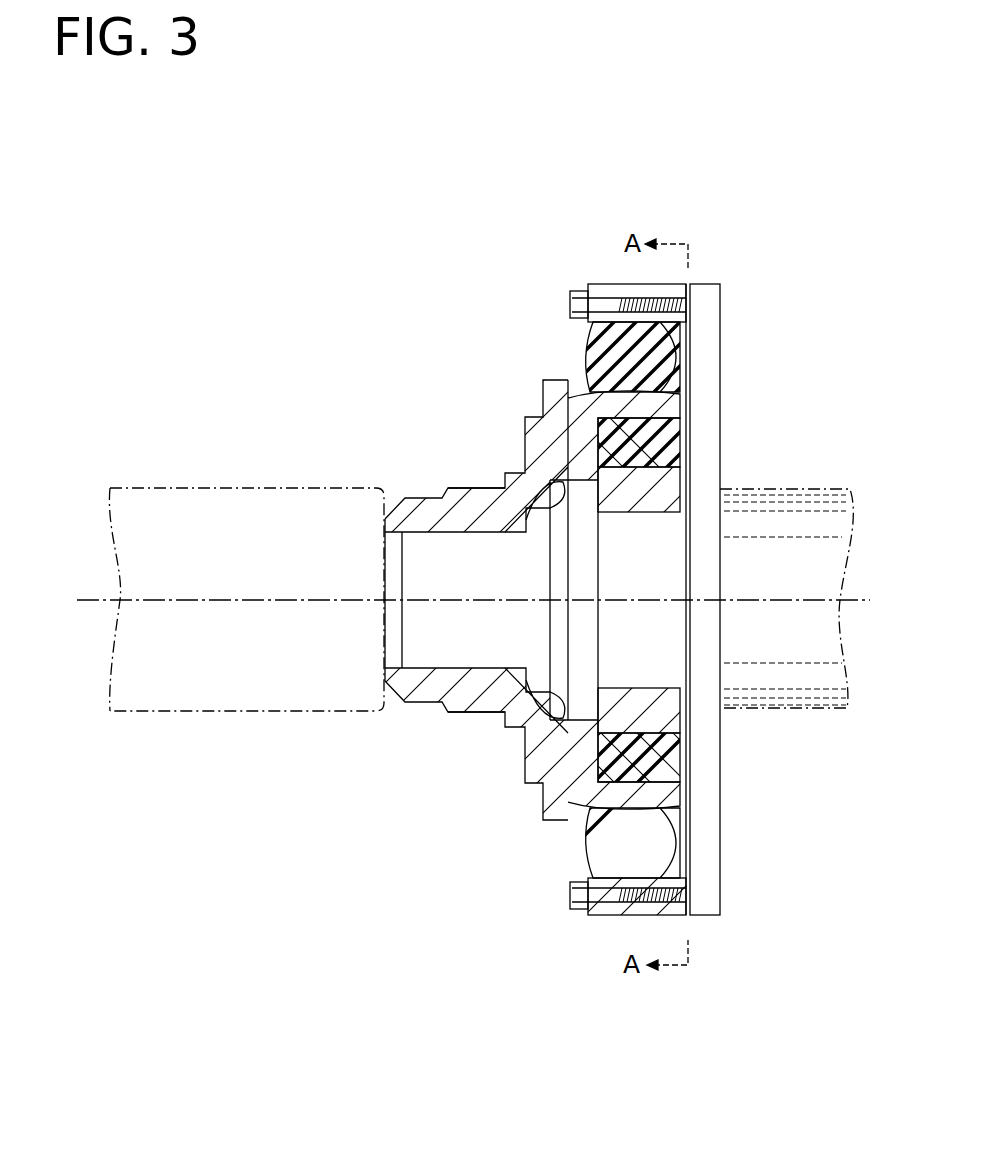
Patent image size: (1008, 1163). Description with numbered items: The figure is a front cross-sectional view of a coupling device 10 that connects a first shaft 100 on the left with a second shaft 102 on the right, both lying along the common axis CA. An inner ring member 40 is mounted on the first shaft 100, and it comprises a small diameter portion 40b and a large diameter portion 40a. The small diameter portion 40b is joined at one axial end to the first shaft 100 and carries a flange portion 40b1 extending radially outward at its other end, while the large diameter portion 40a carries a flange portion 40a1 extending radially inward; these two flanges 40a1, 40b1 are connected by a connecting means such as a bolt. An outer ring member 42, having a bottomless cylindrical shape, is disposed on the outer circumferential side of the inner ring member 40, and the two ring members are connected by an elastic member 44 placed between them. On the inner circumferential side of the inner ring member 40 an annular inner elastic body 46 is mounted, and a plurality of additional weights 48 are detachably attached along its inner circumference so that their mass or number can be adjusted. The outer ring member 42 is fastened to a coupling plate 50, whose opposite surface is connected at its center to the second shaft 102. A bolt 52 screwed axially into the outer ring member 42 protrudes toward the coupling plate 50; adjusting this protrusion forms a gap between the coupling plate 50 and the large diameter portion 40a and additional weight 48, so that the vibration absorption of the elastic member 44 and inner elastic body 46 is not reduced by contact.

The coupling device 10 is at (504, 546).
The inner ring member 40 is at (504, 600).
The large diameter portion 40a is at (596, 405).
The flange portion 40a1 is at (585, 703).
The small diameter portion 40b is at (447, 488).
The flange portion 40b1 is at (478, 498).
The outer ring member 42 is at (611, 292).
The elastic member 44 is at (605, 845).
The inner elastic body 46 is at (668, 757).
The additional weight 48 is at (682, 487).
The coupling plate 50 is at (712, 818).
The bolt 52 is at (585, 292).
The first shaft 100 is at (225, 487).
The second shaft 102 is at (787, 489).
The central axis CA is at (103, 598).